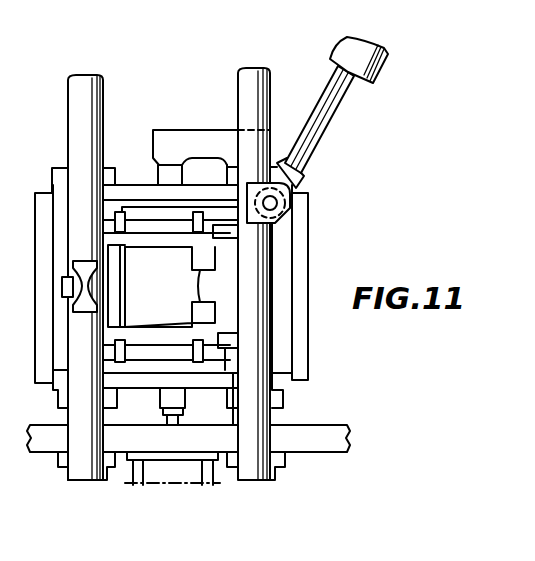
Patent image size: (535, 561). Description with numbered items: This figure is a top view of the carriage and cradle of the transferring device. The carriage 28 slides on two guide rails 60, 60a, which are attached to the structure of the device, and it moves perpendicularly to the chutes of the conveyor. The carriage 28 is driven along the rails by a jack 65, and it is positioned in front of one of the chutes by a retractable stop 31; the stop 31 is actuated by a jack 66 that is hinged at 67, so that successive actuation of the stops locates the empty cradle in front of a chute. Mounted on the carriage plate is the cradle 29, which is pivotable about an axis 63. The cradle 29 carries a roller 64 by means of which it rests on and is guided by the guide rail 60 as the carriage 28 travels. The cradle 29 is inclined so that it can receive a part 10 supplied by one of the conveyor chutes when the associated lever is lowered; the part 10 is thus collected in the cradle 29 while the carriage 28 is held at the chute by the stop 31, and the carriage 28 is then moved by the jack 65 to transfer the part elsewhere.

The part 10 is at (176, 284).
The carriage 28 is at (120, 382).
The cradle 29 is at (232, 273).
The retractable stop 31 is at (186, 131).
The guide rail 60 is at (103, 99).
The guide rail 60a is at (262, 91).
The axis 63 is at (228, 362).
The roller 64 is at (79, 260).
The jack 65 is at (205, 477).
The jack 66 is at (331, 56).
The hinge 67 is at (277, 204).